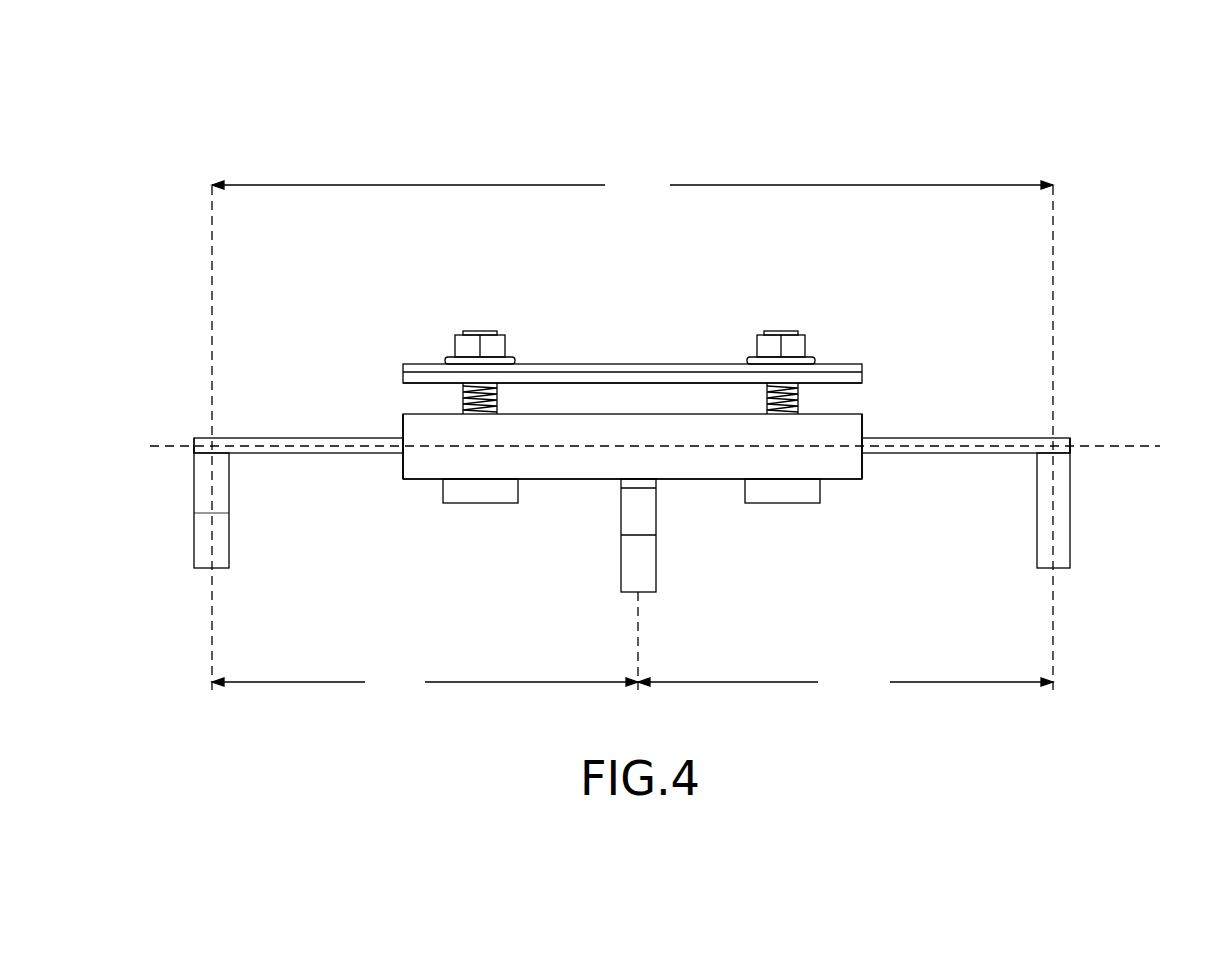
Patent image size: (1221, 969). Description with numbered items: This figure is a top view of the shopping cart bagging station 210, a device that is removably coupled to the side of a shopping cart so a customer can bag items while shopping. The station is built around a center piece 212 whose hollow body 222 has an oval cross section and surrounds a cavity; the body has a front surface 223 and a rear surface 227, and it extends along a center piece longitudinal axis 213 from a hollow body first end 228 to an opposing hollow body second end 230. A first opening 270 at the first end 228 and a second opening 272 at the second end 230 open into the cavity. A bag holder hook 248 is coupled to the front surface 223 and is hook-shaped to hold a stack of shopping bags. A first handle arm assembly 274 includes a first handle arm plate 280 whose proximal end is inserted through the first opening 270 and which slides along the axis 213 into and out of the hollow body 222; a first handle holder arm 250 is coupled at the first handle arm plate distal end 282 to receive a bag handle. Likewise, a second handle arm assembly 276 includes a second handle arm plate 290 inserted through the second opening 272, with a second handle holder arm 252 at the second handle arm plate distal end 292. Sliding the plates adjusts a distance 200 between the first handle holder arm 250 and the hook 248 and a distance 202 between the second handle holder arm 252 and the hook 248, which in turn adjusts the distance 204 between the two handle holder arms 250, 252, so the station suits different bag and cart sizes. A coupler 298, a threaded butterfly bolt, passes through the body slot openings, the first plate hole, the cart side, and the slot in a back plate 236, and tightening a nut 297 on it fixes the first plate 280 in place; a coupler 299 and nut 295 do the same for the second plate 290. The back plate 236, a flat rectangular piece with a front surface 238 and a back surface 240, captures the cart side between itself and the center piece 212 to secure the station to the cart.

The distance 200 is at (425, 683).
The distance 202 is at (845, 684).
The distance 204 is at (632, 186).
The shopping cart bagging station 210 is at (578, 143).
The center piece 212 is at (830, 567).
The center piece longitudinal axis 213 is at (1137, 446).
The hollow body 222 is at (860, 415).
The front surface 223 is at (576, 482).
The rear surface 227 is at (405, 412).
The hollow body first end 228 is at (403, 472).
The hollow body second end 230 is at (856, 429).
The back plate 236 is at (708, 372).
The front surface 238 is at (640, 381).
The back surface 240 is at (576, 364).
The bag holder hook 248 is at (640, 572).
The first handle holder arm 250 is at (223, 548).
The second handle holder arm 252 is at (1043, 533).
The first opening 270 is at (397, 429).
The second opening 272 is at (865, 467).
The first handle arm assembly 274 is at (192, 443).
The second handle arm assembly 276 is at (1075, 451).
The first handle arm plate 280 is at (300, 452).
The first handle arm plate distal end 282 is at (192, 453).
The second handle arm plate 290 is at (978, 452).
The second handle arm plate distal end 292 is at (1072, 444).
The nut 295 is at (793, 348).
The nut 297 is at (490, 346).
The coupler 298 is at (475, 496).
The coupler 299 is at (780, 494).